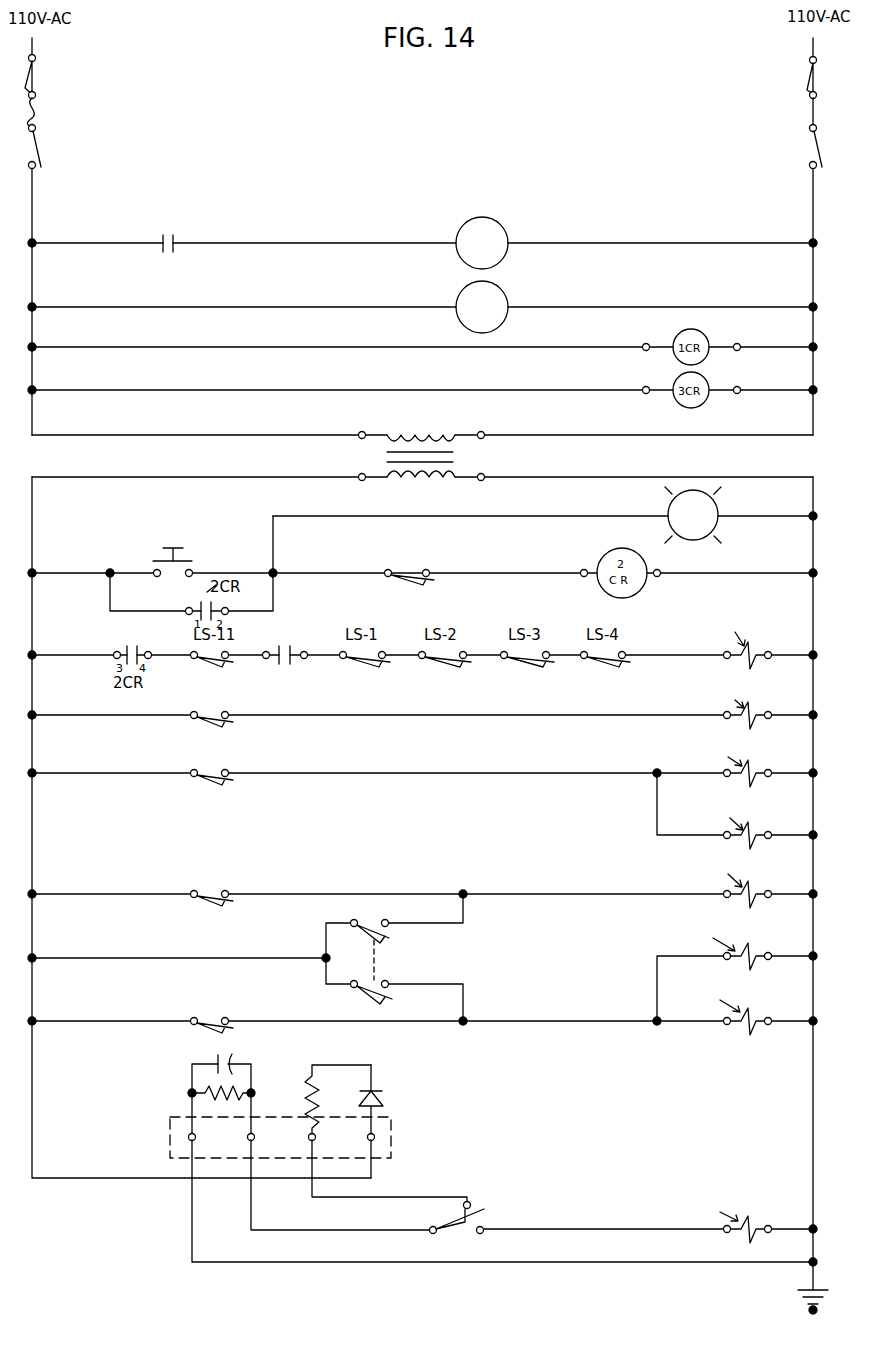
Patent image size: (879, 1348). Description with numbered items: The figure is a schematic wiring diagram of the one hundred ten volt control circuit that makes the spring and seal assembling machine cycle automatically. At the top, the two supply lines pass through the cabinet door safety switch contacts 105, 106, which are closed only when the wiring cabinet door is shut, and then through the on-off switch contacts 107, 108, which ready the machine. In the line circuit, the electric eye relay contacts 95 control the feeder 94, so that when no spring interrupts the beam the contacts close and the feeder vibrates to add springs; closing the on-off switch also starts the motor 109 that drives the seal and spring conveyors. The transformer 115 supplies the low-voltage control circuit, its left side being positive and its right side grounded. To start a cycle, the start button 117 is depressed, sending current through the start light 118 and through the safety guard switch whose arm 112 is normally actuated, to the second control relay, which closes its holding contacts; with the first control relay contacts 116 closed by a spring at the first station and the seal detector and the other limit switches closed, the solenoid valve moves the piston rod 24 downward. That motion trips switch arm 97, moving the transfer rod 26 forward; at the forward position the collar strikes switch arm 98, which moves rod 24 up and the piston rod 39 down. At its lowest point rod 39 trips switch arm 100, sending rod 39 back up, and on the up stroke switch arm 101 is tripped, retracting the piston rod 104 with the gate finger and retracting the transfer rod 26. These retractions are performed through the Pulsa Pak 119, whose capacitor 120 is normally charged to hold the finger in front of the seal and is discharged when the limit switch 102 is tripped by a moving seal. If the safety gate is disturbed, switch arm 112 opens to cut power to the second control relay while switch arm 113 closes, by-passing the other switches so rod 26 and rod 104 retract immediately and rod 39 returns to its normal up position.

The feeder 94 is at (513, 227).
The contacts of the electric eye for coil relay 3CR 95 is at (186, 230).
The switch arm 97 is at (228, 726).
The switch arm 98 is at (228, 784).
The switch arm 100 is at (228, 906).
The switch arm 101 is at (228, 1033).
The LS10 switch 102 is at (455, 1218).
The switch contacts 105 is at (36, 86).
The switch contacts 106 is at (808, 78).
The on-off switch contacts 107 is at (39, 153).
The on-off switch contacts 108 is at (812, 150).
The motor 109 is at (506, 296).
The switch arm 112 is at (430, 580).
The switch arm 113 is at (326, 968).
The transformer 115 is at (462, 460).
The contacts of relay 1CR 116 is at (288, 641).
The start button 117 is at (190, 557).
The start light 118 is at (720, 502).
The Pulsa Pak 119 is at (401, 1086).
The capacitor 120 is at (181, 1072).
The piston rod 24 is at (750, 699).
The transfer rod 26 is at (748, 858).
The piston rod 39 is at (747, 854).
The piston rod 104 is at (735, 1083).